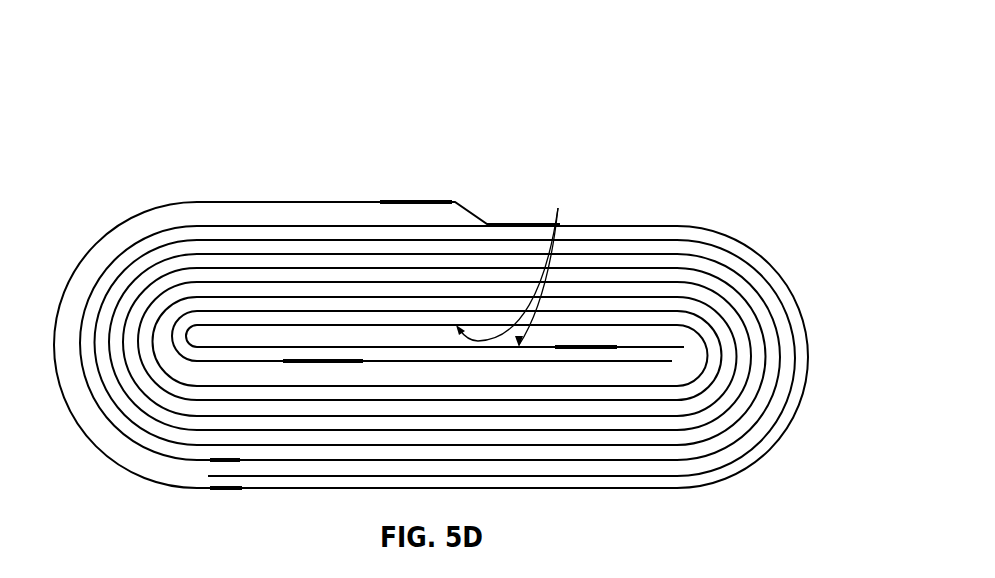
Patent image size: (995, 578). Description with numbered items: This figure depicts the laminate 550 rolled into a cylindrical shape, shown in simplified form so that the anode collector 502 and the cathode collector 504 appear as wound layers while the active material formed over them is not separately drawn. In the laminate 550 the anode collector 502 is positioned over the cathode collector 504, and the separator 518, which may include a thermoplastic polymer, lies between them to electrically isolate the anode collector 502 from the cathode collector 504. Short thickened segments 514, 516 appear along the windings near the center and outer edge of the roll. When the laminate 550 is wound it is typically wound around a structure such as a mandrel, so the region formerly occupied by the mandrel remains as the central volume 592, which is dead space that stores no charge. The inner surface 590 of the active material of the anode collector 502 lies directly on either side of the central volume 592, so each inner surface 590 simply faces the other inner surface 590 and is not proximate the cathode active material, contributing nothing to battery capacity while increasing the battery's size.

The laminate 550 is at (468, 287).
The anode collector 502 is at (770, 430).
The cathode collector 504 is at (775, 265).
The separator 518 is at (797, 390).
The first tab 514 is at (590, 342).
The second tab 516 is at (317, 358).
The inner surface 590 is at (515, 263).
The central volume 592 is at (398, 335).